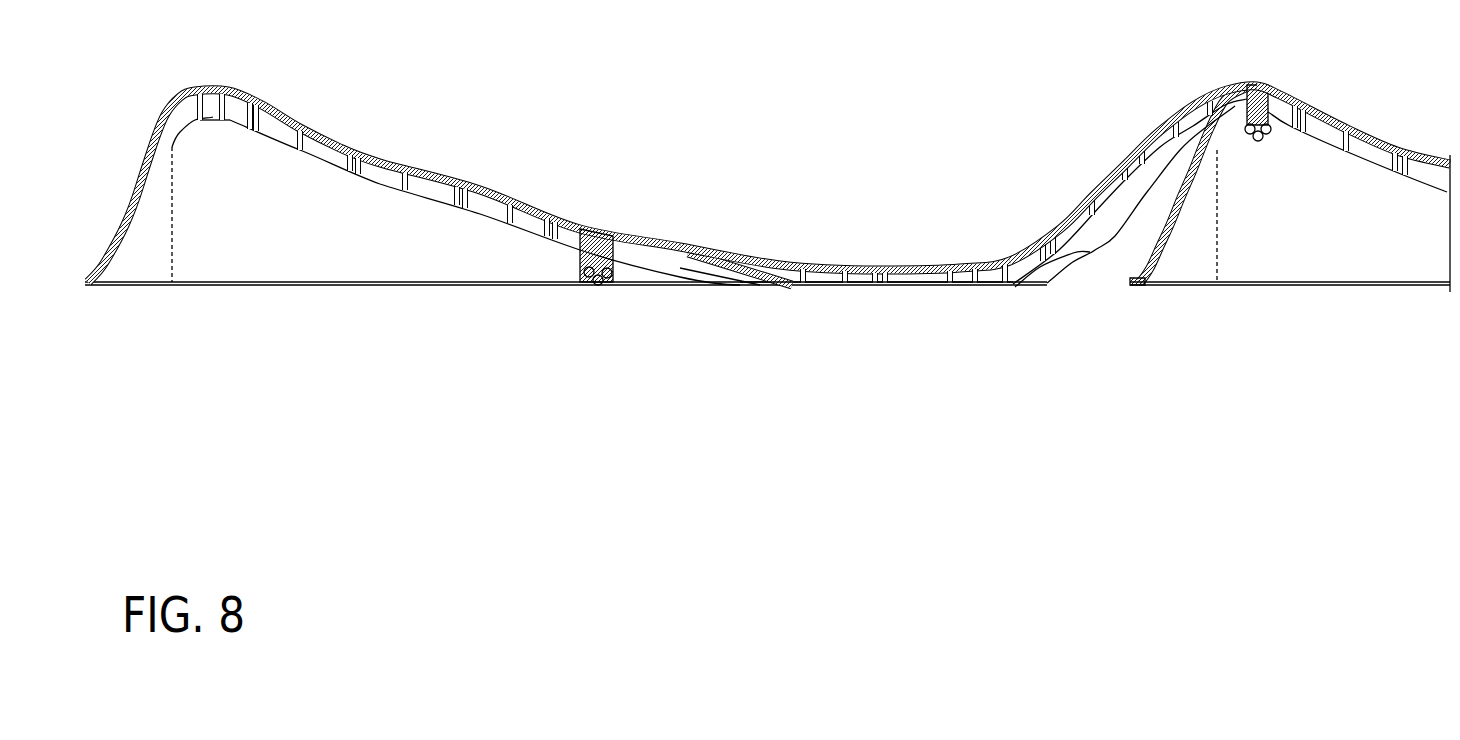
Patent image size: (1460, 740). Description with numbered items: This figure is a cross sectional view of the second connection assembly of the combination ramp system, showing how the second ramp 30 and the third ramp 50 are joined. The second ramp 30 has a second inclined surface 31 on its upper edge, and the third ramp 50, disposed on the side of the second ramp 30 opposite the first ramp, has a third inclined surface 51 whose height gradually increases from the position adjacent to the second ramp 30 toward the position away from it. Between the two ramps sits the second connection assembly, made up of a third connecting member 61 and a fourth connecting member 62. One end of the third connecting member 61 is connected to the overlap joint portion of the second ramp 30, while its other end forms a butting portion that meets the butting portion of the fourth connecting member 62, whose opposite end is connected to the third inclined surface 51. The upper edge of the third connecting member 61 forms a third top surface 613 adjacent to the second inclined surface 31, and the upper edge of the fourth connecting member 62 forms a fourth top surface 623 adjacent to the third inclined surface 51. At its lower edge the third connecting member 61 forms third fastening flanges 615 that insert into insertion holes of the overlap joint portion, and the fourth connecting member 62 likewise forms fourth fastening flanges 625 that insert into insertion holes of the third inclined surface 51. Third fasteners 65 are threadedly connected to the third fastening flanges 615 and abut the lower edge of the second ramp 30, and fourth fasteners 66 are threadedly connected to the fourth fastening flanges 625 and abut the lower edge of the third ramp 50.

The second ramp 30 is at (1393, 315).
The second inclined surface 31 is at (1394, 150).
The third ramp 50 is at (321, 314).
The third inclined surface 51 is at (423, 158).
The third connecting member 61 is at (1052, 310).
The fourth connecting member 62 is at (866, 317).
The third fasteners 65 is at (1270, 135).
The fourth fasteners 66 is at (610, 288).
The third top surface 613 is at (1123, 150).
The third fastening flanges 615 is at (1257, 135).
The fourth top surface 623 is at (717, 258).
The fourth fastening flanges 625 is at (600, 290).